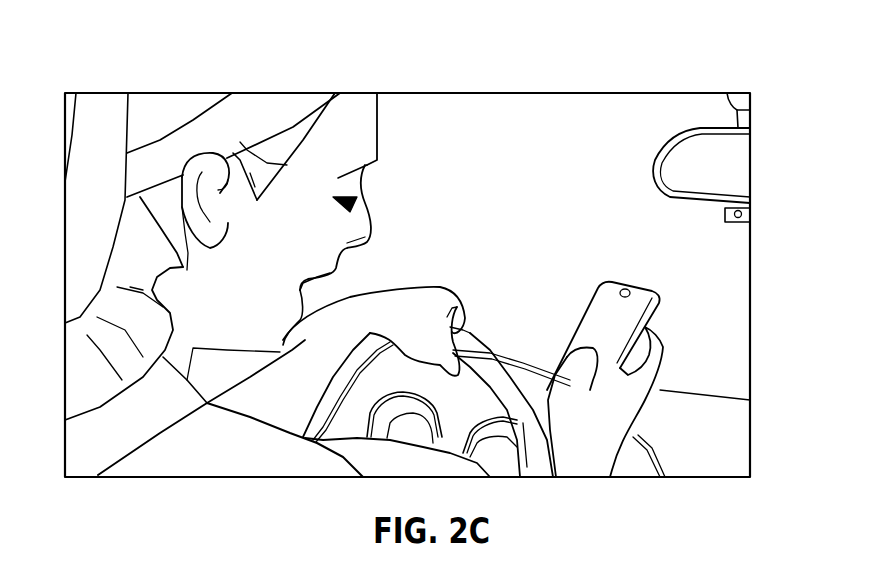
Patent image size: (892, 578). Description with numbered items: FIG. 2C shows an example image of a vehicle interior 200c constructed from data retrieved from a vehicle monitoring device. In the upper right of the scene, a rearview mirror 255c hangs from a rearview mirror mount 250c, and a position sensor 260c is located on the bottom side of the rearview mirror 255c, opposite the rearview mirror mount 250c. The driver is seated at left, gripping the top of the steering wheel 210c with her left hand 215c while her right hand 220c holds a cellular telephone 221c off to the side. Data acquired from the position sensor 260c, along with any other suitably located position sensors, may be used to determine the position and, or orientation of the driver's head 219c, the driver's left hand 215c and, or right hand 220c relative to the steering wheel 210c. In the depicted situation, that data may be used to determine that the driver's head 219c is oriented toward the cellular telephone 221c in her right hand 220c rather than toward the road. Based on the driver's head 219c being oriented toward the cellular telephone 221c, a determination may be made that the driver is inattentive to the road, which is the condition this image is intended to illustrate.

The vehicle interior 200c is at (121, 67).
The steering wheel 210c is at (483, 333).
The driver's left hand 215c is at (447, 287).
The driver's head 219c is at (378, 130).
The driver's right hand 220c is at (637, 368).
The cellular telephone 221c is at (633, 310).
The rearview mirror mount 250c is at (738, 100).
The rearview mirror 255c is at (728, 156).
The position sensor 260c is at (742, 213).